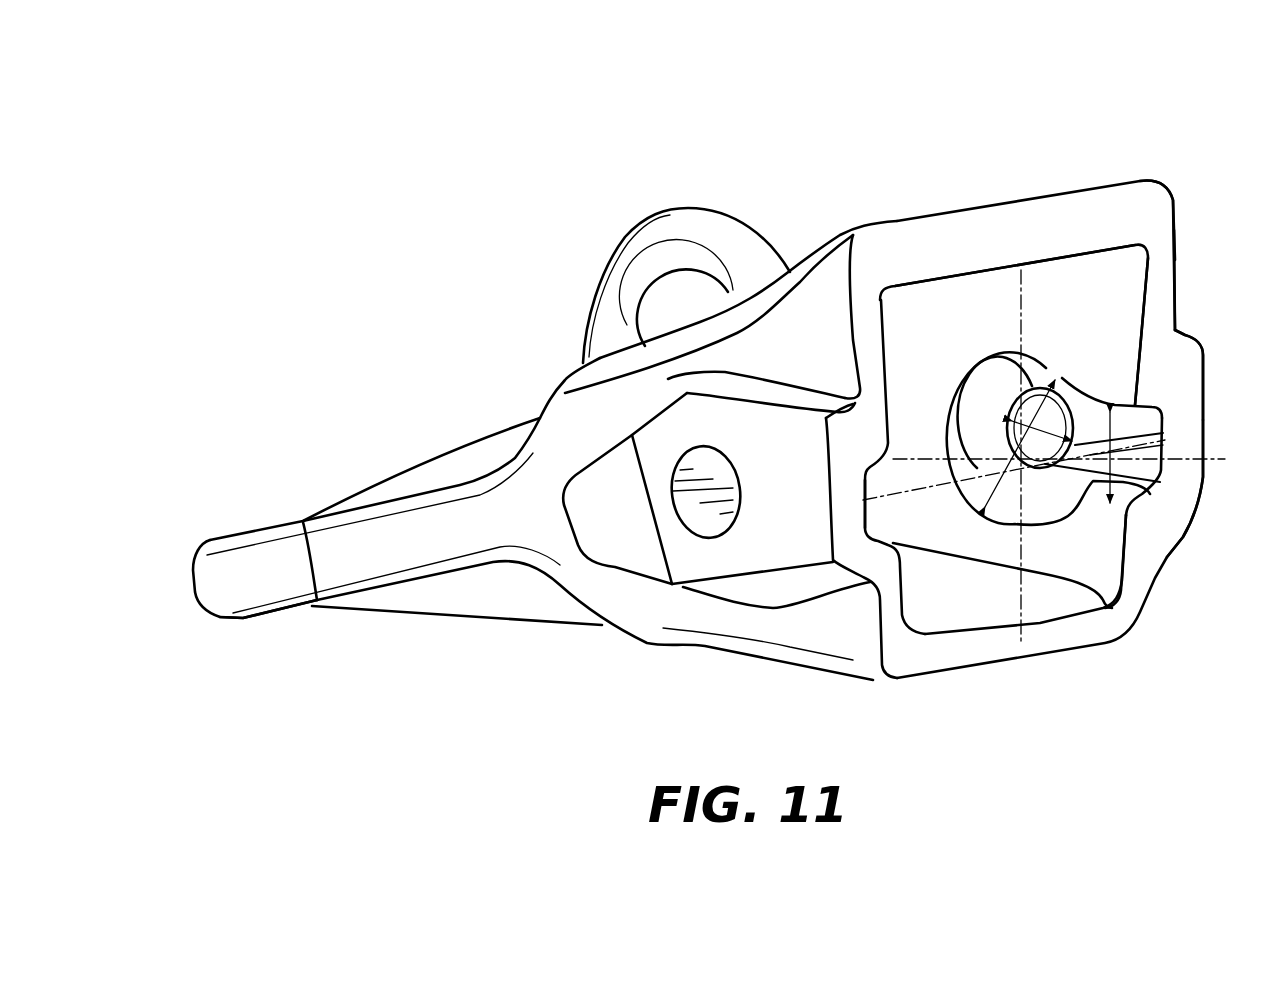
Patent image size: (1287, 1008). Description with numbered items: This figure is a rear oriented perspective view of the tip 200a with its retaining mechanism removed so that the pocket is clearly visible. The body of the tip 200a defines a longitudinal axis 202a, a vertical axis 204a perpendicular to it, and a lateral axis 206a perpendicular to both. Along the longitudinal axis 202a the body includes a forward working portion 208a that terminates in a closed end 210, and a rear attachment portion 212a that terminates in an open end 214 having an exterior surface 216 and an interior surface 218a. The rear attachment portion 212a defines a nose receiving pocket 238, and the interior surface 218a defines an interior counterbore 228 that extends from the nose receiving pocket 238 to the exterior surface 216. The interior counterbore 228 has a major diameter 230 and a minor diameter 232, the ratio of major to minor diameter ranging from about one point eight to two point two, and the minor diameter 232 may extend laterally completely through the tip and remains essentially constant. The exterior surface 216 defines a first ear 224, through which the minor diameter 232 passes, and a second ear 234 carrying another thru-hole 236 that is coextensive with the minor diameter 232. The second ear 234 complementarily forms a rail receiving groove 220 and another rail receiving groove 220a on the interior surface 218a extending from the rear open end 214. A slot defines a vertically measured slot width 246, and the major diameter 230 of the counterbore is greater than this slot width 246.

The tip 200a is at (1063, 164).
The longitudinal axis 202a is at (1198, 462).
The vertical axis 204a is at (1022, 613).
The lateral axis 206a is at (1145, 443).
The forward working portion 208a is at (267, 621).
The closed end 210 is at (193, 578).
The rear attachment portion 212a is at (1179, 208).
The open end 214 is at (1122, 360).
The exterior surface 216 is at (1180, 263).
The interior surface 218a is at (1058, 333).
The inner wall 220 is at (1140, 497).
The rail receiving groove 220a is at (885, 537).
The first ear 224 is at (1204, 349).
The interior counterbore 228 is at (1008, 385).
The major diameter 230 is at (1017, 420).
The minor diameter 232 is at (1100, 407).
The second ear 234 is at (768, 559).
The thru-hole 236 is at (693, 500).
The nose receiving pocket 238 is at (916, 306).
The slot width 246 is at (1142, 488).